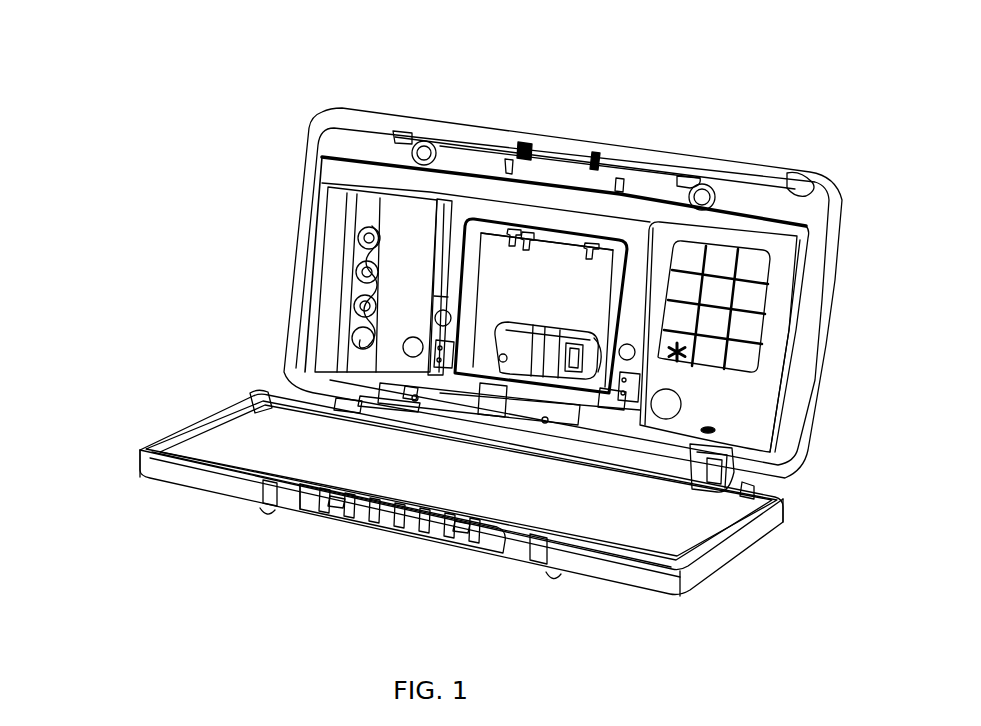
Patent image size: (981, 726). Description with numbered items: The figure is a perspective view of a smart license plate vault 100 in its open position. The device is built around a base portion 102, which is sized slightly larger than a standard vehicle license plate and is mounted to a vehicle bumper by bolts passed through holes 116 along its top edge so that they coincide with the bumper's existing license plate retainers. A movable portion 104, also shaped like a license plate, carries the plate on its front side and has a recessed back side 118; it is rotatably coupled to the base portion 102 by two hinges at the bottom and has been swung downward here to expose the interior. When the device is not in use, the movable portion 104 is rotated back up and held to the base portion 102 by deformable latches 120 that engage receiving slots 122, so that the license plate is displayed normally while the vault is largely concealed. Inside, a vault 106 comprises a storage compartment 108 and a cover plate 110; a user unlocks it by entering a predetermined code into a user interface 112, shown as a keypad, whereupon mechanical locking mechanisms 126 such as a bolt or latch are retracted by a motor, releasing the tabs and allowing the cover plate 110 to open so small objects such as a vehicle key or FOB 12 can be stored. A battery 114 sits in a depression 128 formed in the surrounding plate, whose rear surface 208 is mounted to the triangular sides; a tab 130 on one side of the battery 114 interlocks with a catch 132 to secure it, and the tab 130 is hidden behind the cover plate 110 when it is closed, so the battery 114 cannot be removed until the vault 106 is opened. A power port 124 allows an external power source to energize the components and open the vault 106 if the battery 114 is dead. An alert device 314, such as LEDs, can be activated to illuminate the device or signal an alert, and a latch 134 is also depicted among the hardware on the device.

The smart license plate vault 100 is at (126, 96).
The base portion 102 is at (305, 240).
The movable portion 104 is at (167, 440).
The vault 106 is at (630, 325).
The storage compartment 108 is at (596, 278).
The cover plate 110 is at (567, 425).
The user interface 112 is at (725, 245).
The battery 114 is at (325, 320).
The holes 116 is at (413, 151).
The recessed back side 118 is at (555, 249).
The deformable latches 120 is at (413, 537).
The receiving slots 122 is at (618, 174).
The power port 124 is at (370, 405).
The mechanical locking mechanisms 126 is at (591, 247).
The depression 128 is at (528, 234).
The tab 130 is at (352, 268).
The catch 132 is at (447, 273).
The latch 134 is at (620, 418).
The rear surface 208 is at (805, 308).
The alert device 314 is at (536, 158).
The key fob 12 is at (548, 350).